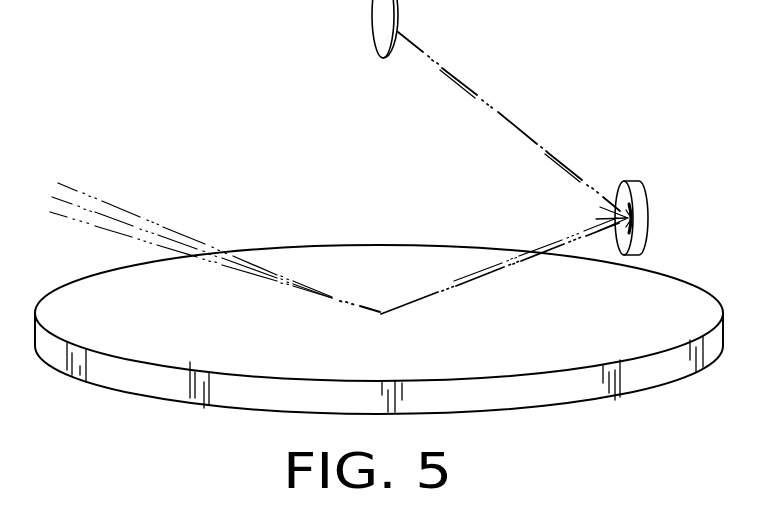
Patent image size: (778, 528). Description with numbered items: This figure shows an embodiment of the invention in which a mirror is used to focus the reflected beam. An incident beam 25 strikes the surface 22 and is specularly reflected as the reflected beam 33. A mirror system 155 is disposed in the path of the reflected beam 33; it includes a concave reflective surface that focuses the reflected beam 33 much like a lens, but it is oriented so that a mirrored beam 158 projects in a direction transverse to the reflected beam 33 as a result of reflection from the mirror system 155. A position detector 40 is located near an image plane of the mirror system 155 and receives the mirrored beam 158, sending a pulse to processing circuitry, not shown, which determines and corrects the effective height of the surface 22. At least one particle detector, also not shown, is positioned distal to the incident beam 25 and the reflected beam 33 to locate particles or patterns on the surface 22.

The surface 22 is at (108, 285).
The incident beam 25 is at (163, 226).
The specularly reflected beam 33 is at (499, 262).
The position detector 40 is at (373, 13).
The mirror system 155 is at (649, 216).
The mirrored beam 158 is at (462, 83).